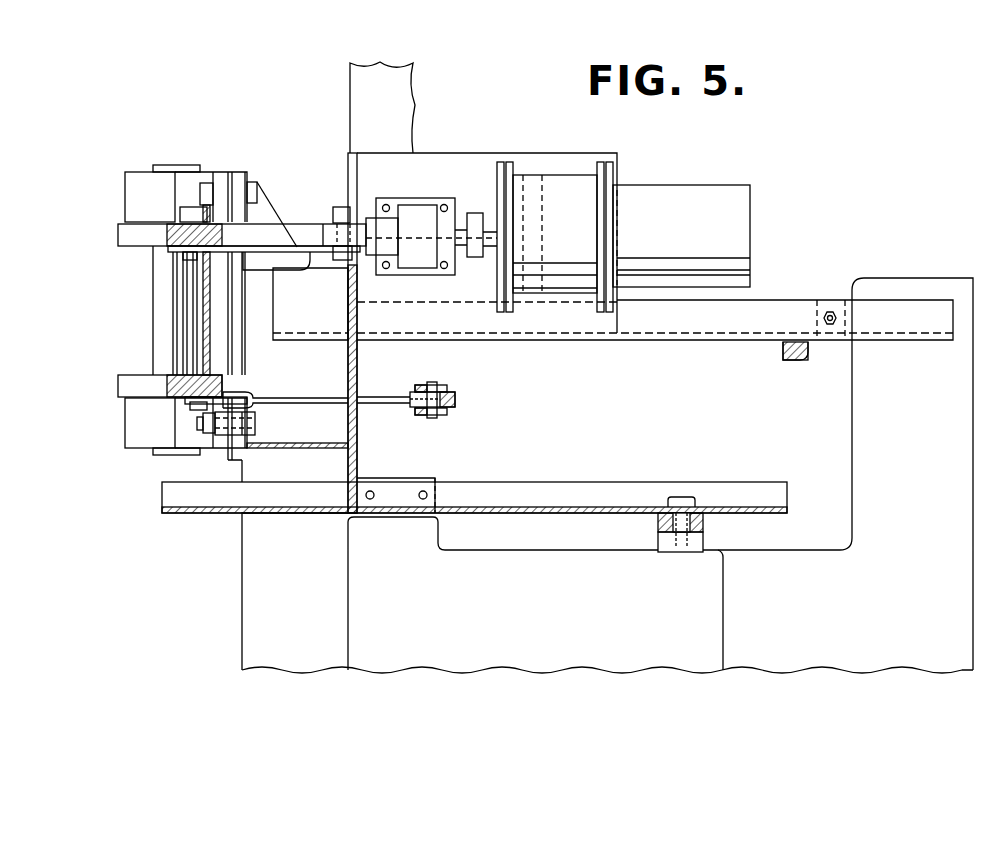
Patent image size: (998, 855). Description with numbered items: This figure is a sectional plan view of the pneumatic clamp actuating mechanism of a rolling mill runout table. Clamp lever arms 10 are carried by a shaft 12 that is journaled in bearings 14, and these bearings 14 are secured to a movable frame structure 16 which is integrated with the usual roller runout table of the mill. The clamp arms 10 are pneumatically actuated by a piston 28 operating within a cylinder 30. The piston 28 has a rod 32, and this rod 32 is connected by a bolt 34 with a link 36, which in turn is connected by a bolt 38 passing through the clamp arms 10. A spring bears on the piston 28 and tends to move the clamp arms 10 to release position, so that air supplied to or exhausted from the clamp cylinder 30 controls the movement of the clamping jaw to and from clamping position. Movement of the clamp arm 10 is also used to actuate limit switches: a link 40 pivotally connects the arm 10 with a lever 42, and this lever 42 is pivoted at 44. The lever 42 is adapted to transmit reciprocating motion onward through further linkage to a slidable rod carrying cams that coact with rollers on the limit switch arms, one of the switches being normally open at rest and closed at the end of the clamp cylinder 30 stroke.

The clamp lever arm 10 is at (134, 238).
The shaft 12 is at (155, 313).
The bearing 14 is at (140, 205).
The movable frame structure 16 is at (484, 626).
The piston 28 is at (533, 185).
The cylinder 30 is at (565, 190).
The rod 32 is at (458, 232).
The bolt 34 is at (343, 207).
The link 36 is at (268, 247).
The bolt 38 is at (190, 208).
The link 40 is at (325, 403).
The lever 42 is at (455, 399).
The pivot 44 is at (430, 418).